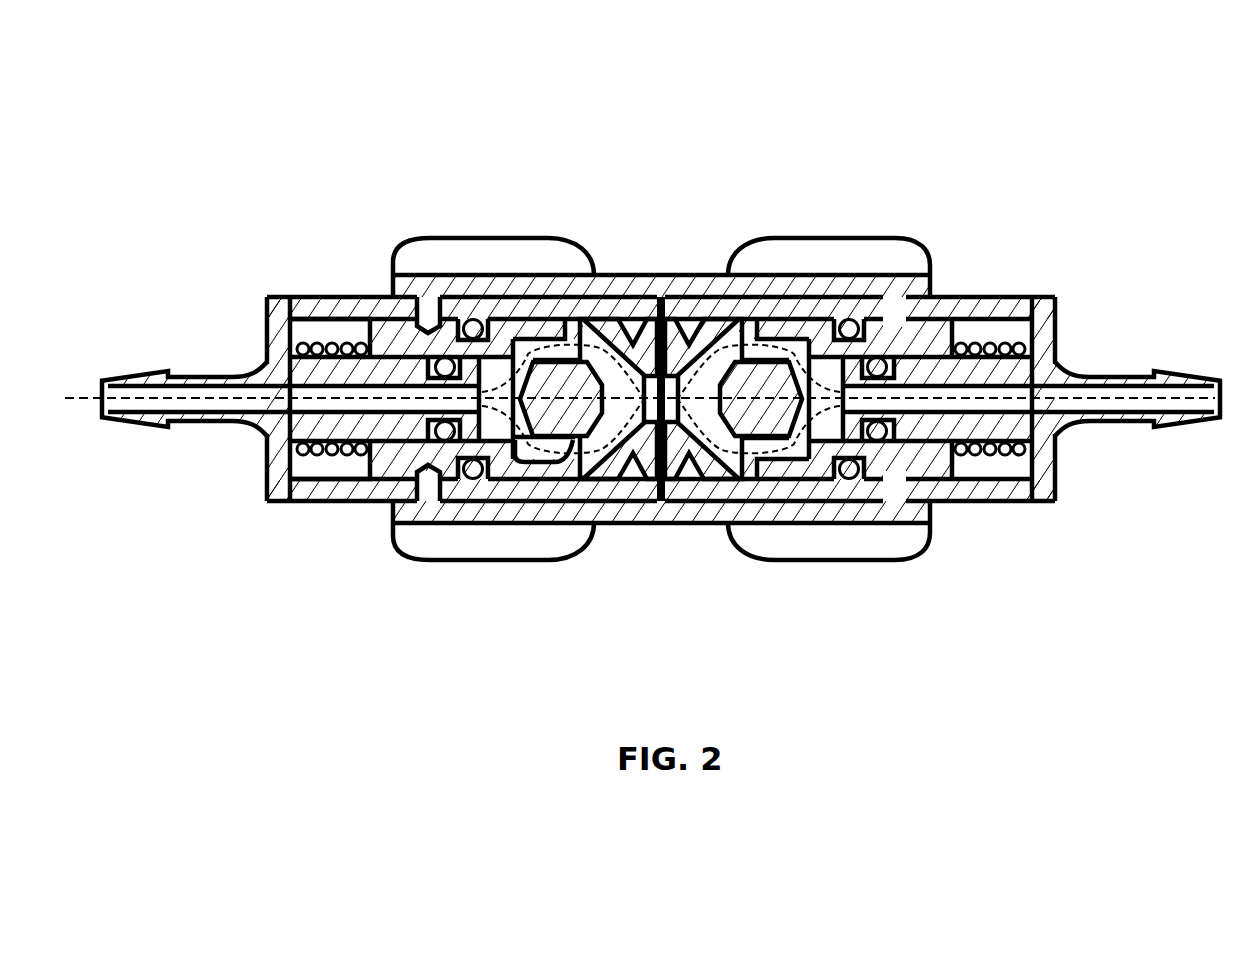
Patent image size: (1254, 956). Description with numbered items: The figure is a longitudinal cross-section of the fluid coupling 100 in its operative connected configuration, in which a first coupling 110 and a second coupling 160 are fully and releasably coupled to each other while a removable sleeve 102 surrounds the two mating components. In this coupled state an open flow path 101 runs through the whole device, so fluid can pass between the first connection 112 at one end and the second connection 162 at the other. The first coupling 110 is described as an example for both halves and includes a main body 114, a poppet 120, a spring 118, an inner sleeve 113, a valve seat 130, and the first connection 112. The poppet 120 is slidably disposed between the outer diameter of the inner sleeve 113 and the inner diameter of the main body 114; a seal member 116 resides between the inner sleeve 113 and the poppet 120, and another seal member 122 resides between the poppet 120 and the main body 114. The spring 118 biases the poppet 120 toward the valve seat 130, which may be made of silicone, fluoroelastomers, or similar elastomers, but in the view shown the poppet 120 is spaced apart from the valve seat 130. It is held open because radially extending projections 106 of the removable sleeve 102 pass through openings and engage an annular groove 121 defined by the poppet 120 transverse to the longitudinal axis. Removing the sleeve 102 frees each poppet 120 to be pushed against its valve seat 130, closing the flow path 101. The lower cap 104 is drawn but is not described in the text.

The fluid coupling 100 is at (750, 181).
The open flow path 101 is at (180, 402).
The removable sleeve 102 is at (605, 271).
The lower housing cap 104 is at (715, 525).
The radially extending projections 106 is at (915, 494).
The first coupling 110 is at (288, 254).
The first connection 112 is at (136, 371).
The inner sleeve 113 is at (317, 343).
The main body 114 is at (297, 505).
The seal member 116 is at (447, 455).
The spring 118 is at (325, 458).
The poppet 120 is at (355, 465).
The annular groove 121 is at (402, 330).
The seal member 122 is at (555, 462).
The valve seat 130 is at (598, 483).
The second coupling 160 is at (1013, 254).
The second connection 162 is at (1178, 370).